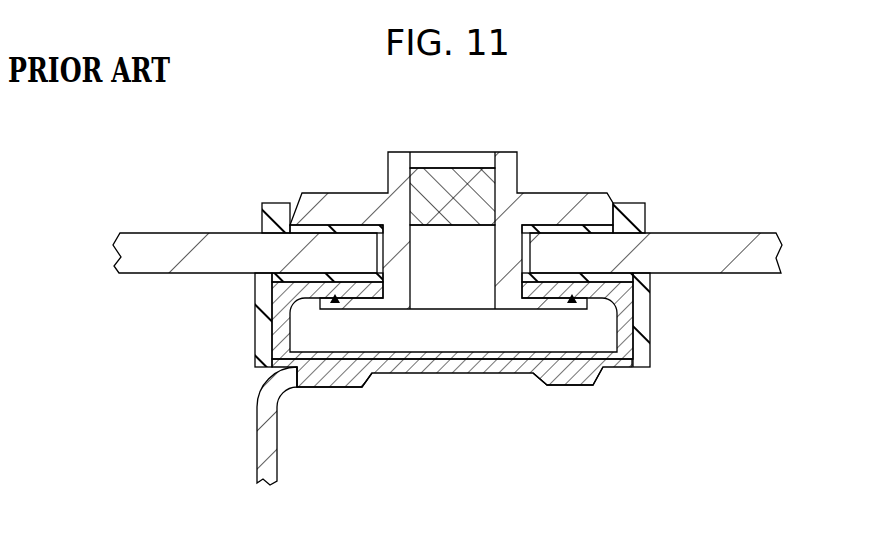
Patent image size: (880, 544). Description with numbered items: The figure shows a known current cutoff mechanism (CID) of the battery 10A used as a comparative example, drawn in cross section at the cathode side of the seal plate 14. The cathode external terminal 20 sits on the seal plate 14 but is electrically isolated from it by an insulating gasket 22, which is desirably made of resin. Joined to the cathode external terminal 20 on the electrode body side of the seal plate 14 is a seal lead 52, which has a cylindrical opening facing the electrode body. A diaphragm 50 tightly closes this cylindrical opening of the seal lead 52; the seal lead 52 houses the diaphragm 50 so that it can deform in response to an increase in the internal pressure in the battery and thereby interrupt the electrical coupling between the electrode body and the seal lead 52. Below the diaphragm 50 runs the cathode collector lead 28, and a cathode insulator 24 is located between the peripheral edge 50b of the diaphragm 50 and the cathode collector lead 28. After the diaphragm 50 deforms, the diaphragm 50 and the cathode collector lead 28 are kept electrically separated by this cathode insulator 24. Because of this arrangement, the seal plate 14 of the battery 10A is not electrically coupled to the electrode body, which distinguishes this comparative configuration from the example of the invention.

The battery 10A is at (606, 104).
The seal plate 14 is at (213, 245).
The cathode external terminal 20 is at (547, 203).
The insulating gasket 22 is at (637, 223).
The cathode insulator 24 is at (640, 307).
The cathode collector lead 28 is at (261, 421).
The diaphragm 50 is at (328, 356).
The peripheral edge 50b is at (308, 358).
The seal lead 52 is at (620, 333).